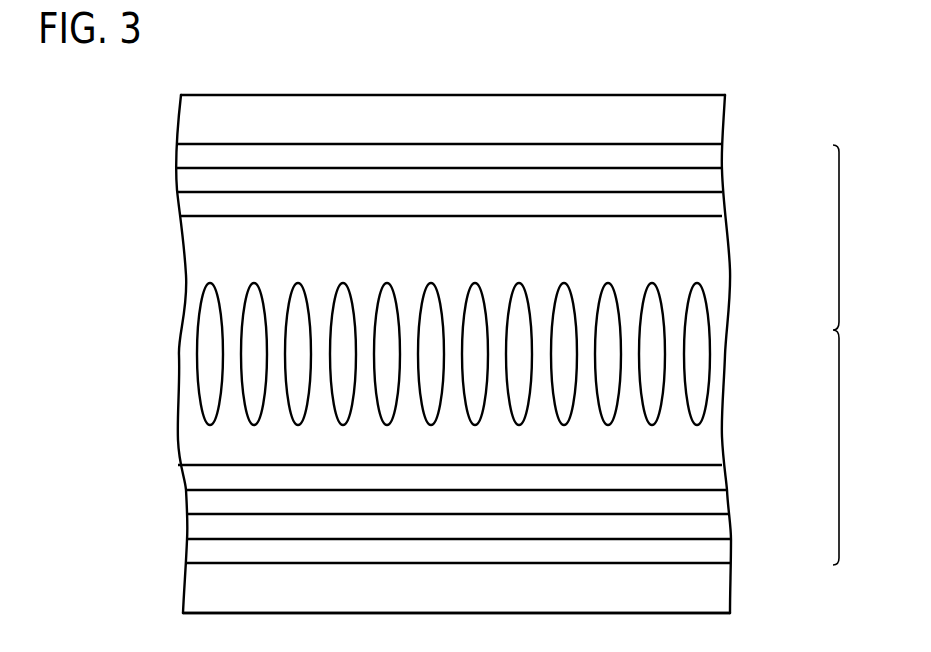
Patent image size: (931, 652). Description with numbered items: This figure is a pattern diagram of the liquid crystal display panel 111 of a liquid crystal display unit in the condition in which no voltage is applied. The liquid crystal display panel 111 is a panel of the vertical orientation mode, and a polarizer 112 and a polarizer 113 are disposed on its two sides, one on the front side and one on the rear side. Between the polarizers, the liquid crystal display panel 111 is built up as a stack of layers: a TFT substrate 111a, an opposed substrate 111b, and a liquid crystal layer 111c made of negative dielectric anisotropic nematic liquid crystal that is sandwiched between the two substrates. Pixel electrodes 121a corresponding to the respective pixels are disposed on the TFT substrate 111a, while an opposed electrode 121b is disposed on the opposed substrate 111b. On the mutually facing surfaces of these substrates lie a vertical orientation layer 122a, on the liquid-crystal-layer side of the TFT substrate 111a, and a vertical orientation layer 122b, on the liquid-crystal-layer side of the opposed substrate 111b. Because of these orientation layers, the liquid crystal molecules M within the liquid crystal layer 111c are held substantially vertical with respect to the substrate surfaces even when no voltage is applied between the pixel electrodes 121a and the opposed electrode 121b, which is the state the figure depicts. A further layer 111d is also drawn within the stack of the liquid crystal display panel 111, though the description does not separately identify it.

The polarizer 113 is at (713, 117).
The opposed substrate 111b is at (713, 151).
The opposed electrode 121b is at (192, 184).
The vertical orientation layer 122b is at (192, 209).
The liquid crystal layer 111c is at (708, 243).
The liquid crystal molecules M is at (698, 343).
The vertical orientation layer 122a is at (194, 479).
The pixel electrodes 121a is at (194, 507).
The TFT substrate 111a is at (716, 525).
The lower insulating layer 111d is at (716, 550).
The polarizer 112 is at (716, 590).
The liquid crystal display panel 111 is at (862, 355).